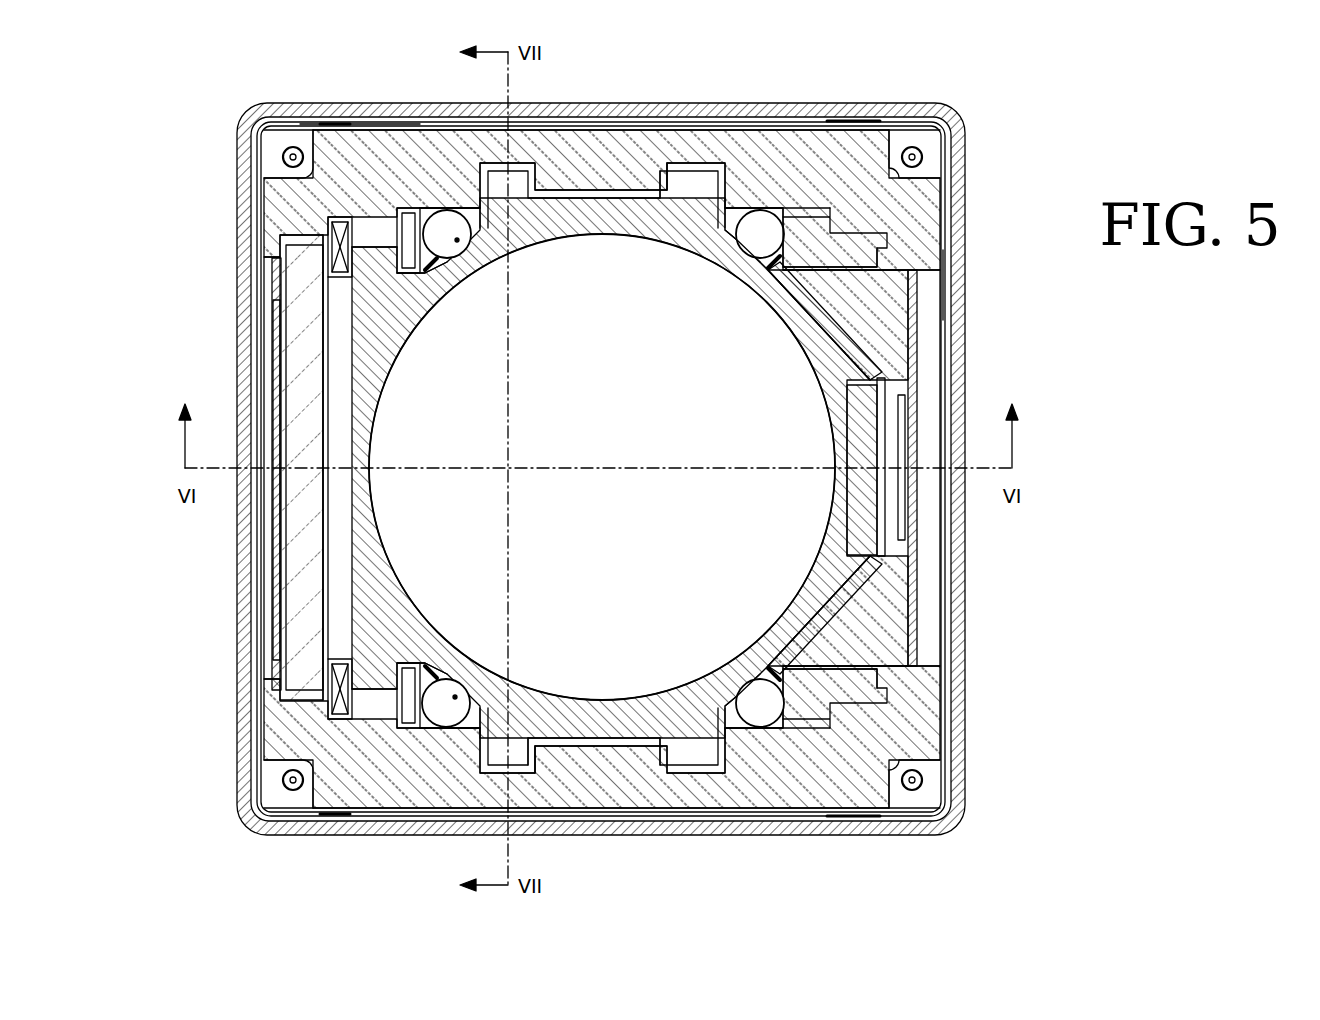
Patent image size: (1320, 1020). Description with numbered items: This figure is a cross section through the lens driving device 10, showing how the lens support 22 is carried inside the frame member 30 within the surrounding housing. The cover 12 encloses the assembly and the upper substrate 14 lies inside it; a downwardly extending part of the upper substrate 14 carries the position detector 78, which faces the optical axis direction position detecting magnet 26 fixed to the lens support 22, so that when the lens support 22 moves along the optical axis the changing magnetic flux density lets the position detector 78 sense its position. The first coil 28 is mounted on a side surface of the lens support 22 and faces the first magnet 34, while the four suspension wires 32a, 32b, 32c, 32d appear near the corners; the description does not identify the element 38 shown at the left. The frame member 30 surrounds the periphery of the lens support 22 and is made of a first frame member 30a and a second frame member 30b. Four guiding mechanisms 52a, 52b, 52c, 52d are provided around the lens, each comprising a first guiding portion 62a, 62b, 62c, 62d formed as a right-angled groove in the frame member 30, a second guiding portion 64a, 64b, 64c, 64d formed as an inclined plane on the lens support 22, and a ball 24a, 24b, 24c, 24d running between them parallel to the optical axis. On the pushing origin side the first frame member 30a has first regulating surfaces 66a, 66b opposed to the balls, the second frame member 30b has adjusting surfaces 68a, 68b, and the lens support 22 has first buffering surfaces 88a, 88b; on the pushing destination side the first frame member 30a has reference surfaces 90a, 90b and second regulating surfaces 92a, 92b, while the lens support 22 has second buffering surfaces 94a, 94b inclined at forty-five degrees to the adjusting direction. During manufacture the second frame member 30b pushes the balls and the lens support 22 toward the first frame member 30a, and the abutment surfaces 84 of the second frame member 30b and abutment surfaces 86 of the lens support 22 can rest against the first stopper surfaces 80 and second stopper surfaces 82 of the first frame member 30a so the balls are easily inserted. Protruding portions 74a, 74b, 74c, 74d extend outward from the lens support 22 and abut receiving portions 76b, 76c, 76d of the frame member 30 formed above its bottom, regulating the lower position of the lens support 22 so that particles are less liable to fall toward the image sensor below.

The lens driving device 10 is at (1008, 130).
The cover 12 is at (958, 200).
The upper substrate 14 is at (915, 330).
The lens support 22 is at (880, 555).
The ball 24a is at (440, 272).
The ball 24b is at (742, 252).
The ball 24c is at (745, 690).
The ball 24d is at (440, 680).
The optical axis direction position detecting magnet 26 is at (855, 470).
The first coil 28 is at (268, 252).
The frame member 30 is at (620, 123).
The first frame member 30a is at (330, 126).
The second frame member 30b is at (945, 286).
The suspension wire 32a is at (293, 147).
The suspension wire 32b is at (922, 160).
The suspension wire 32c is at (912, 790).
The suspension wire 32d is at (293, 790).
The first magnet 34 is at (292, 335).
The heat sink plate 38 is at (275, 548).
The guiding mechanism 52a is at (450, 222).
The guiding mechanism 52b is at (772, 228).
The guiding mechanism 52c is at (765, 715).
The guiding mechanism 52d is at (446, 715).
The first guiding portion 62a is at (406, 212).
The first guiding portion 62b is at (782, 204).
The first guiding portion 62c is at (782, 732).
The first guiding portion 62d is at (410, 726).
The second guiding portion 64a is at (436, 266).
The second guiding portion 64b is at (772, 268).
The second guiding portion 64c is at (772, 670).
The second guiding portion 64d is at (436, 672).
The first regulating surface 66a is at (745, 205).
The first regulating surface 66b is at (770, 732).
The adjusting surface 68a is at (895, 262).
The adjusting surface 68b is at (895, 675).
The protruding portion 74a is at (525, 175).
The protruding portion 74b is at (680, 180).
The protruding portion 74c is at (650, 770).
The protruding portion 74d is at (525, 750).
The receiving portion 76b is at (700, 175).
The receiving portion 76c is at (690, 770).
The receiving portion 76d is at (520, 768).
The position detector 78 is at (902, 520).
The first stopper surface 80 is at (882, 248).
The second stopper surface 82 is at (350, 126).
The abutment surface 84 is at (880, 138).
The abutment surface 86 is at (366, 330).
The first buffering surface 88a is at (818, 316).
The first buffering surface 88b is at (780, 676).
The reference surface 90a is at (410, 250).
The reference surface 90b is at (405, 690).
The second regulating surface 92a is at (442, 205).
The second regulating surface 92b is at (440, 732).
The second buffering surface 94a is at (462, 243).
The second buffering surface 94b is at (458, 695).